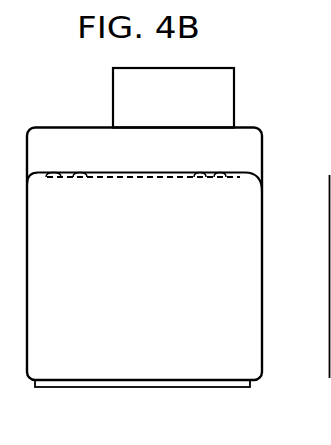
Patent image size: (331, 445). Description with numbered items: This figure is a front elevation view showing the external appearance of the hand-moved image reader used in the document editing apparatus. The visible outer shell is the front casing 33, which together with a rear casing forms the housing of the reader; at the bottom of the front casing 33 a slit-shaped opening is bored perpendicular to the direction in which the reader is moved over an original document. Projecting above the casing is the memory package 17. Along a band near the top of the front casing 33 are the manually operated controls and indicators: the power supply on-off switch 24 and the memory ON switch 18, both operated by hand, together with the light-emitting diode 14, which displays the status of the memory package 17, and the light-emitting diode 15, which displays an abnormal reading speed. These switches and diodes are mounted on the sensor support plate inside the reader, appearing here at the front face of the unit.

The front casing 33 is at (247, 148).
The memory package 17 is at (234, 80).
The power supply on-off switch 24 is at (226, 178).
The memory ON switch 18 is at (200, 178).
The light-emitting diode 15 is at (50, 176).
The light-emitting diode 14 is at (78, 175).